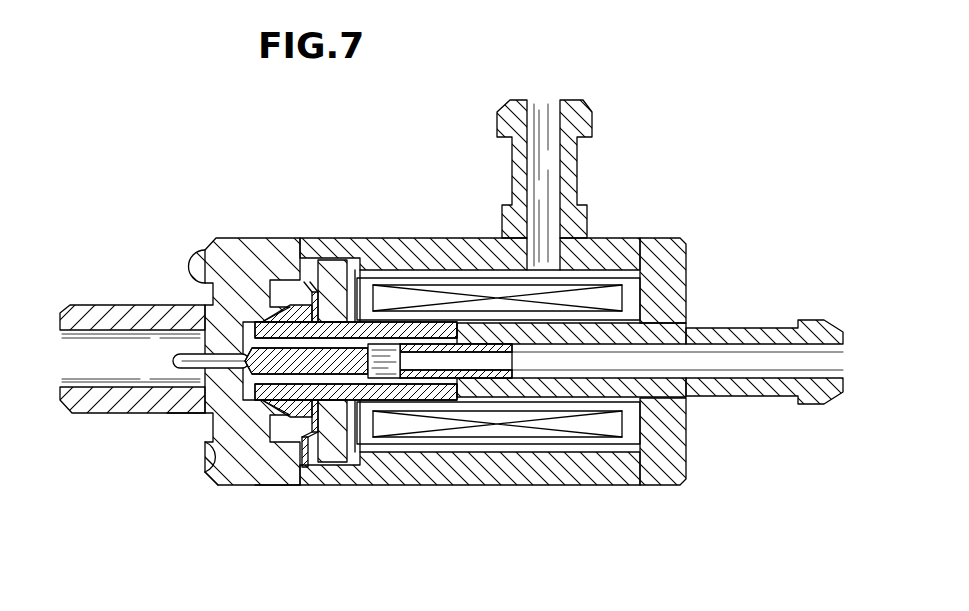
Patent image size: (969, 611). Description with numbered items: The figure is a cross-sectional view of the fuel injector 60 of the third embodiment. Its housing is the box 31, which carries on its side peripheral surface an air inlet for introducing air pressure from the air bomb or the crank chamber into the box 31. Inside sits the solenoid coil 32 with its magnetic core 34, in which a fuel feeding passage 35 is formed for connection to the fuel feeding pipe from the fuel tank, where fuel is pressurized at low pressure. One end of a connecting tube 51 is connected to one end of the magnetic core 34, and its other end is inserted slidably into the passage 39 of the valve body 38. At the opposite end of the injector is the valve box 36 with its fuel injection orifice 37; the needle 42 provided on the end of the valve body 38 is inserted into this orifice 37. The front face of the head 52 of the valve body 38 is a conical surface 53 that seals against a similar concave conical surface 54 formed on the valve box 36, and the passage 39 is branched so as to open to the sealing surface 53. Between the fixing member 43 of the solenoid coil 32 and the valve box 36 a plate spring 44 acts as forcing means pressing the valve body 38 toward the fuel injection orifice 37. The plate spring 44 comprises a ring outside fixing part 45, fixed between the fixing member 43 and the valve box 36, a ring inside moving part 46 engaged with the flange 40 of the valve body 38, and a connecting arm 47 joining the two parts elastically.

The box 31 is at (372, 240).
The solenoid coil 32 is at (610, 300).
The magnetic core 34 is at (482, 322).
The fuel feeding passage 35 is at (765, 355).
The valve box 36 is at (262, 275).
The fuel injection orifice 37 is at (207, 318).
The valve body 38 is at (441, 378).
The passage 39 is at (390, 372).
The flange 40 is at (228, 478).
The needle 42 is at (172, 359).
The fixing member 43 is at (330, 262).
The plate spring 44 is at (347, 550).
The ring outside fixing part 45 is at (270, 488).
The ring inside moving part 46 is at (335, 462).
The connecting arm 47 is at (306, 466).
The connecting tube 51 is at (481, 380).
The head 52 is at (203, 455).
The conical surface 53 is at (200, 424).
The concave conical surface 54 is at (225, 252).
The fuel injector 60 is at (411, 182).